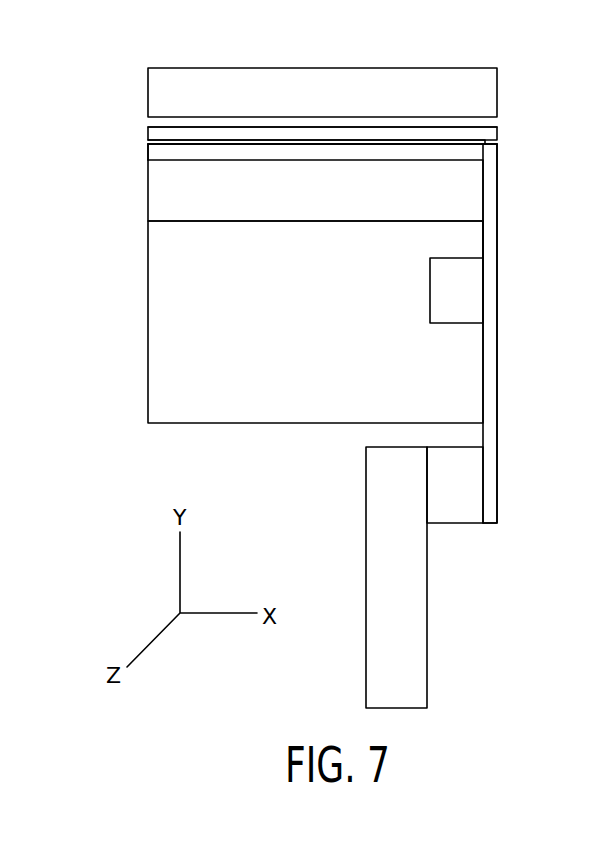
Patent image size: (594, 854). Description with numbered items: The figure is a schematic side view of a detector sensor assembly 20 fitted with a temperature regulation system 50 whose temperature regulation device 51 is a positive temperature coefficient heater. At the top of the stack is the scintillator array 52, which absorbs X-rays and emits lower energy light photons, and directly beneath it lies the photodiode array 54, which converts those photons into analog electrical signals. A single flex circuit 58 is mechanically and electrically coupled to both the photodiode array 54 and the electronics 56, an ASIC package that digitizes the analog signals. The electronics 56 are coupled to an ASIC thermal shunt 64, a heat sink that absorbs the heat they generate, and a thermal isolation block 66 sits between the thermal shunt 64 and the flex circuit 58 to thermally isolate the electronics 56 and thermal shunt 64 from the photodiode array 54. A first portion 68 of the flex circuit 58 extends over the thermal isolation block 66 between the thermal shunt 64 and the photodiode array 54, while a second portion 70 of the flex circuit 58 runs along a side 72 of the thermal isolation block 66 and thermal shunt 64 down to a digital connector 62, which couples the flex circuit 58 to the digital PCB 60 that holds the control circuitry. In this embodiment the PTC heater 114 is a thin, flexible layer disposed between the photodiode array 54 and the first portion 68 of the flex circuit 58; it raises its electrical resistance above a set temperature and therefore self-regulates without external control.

The detector sensor assembly 20 is at (335, 50).
The temperature regulation system 50 is at (147, 132).
The temperature regulation device 51 is at (147, 147).
The scintillator array 52 is at (497, 93).
The photodiode array 54 is at (497, 134).
The electronics 56 is at (473, 310).
The flex circuit 58 is at (497, 266).
The digital printed circuit board 60 is at (427, 640).
The digital connector 62 is at (455, 524).
The thermal shunt 64 is at (225, 424).
The thermal isolation layer 66 is at (148, 211).
The first portion of the flex circuit 68 is at (156, 150).
The second portion of the flex circuit 70 is at (497, 385).
The side of the thermal isolation layer and thermal shunt 72 is at (485, 241).
The PTC heater 114 is at (443, 145).